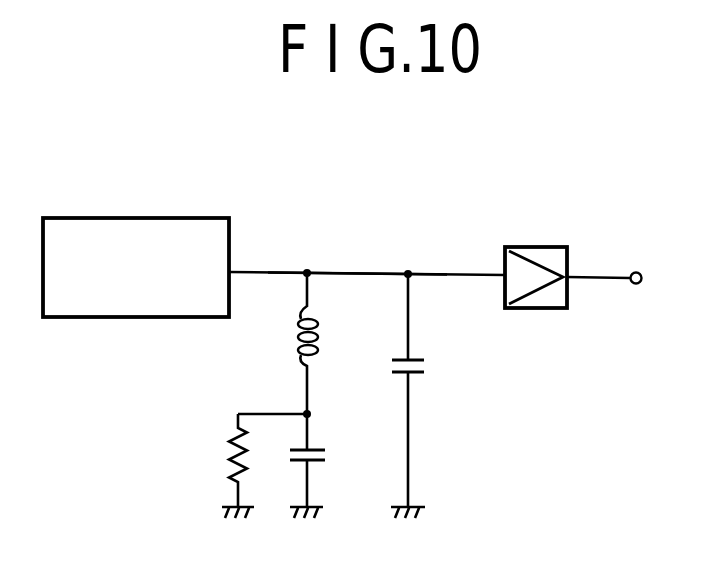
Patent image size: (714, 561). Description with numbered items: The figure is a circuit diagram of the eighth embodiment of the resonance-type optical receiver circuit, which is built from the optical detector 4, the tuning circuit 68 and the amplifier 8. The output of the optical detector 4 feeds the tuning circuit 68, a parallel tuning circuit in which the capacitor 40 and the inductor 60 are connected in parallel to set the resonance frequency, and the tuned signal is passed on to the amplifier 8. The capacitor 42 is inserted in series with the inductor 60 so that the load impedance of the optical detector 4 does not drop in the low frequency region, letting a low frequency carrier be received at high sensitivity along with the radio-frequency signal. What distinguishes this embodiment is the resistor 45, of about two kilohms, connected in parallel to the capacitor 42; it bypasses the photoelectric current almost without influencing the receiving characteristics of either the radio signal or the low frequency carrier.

The optical detector 4 is at (205, 218).
The tuning circuit 68 is at (447, 228).
The amplifier 8 is at (518, 246).
The inductor 60 is at (292, 343).
The capacitor 40 is at (425, 369).
The capacitor 42 is at (321, 452).
The resistor 45 is at (230, 460).